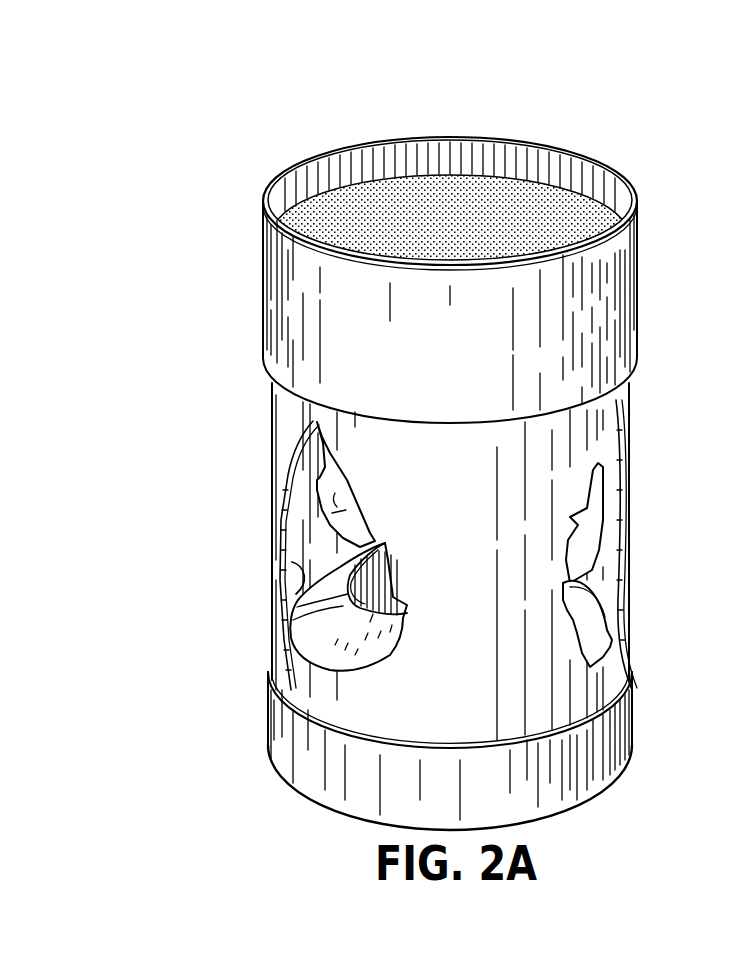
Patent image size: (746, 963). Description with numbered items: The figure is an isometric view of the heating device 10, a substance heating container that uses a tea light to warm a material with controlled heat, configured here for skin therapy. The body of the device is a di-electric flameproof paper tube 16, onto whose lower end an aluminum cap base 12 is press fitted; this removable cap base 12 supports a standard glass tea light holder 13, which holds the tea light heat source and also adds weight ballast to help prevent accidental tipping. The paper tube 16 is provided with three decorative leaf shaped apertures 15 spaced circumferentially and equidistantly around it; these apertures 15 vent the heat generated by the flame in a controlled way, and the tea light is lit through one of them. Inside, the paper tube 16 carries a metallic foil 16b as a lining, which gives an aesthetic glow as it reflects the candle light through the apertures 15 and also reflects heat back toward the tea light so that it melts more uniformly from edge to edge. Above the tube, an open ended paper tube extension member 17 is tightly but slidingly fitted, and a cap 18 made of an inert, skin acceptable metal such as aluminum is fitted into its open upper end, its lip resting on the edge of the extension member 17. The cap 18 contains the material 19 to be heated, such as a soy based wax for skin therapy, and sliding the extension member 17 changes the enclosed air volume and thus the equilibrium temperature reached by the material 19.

The heating device 10 is at (669, 333).
The aluminum cap base 12 is at (617, 753).
The glass tea light holder 13 is at (303, 630).
The leaf shaped apertures 15 is at (608, 486).
The paper tube 16 is at (578, 408).
The metallic foil 16b is at (296, 594).
The tube extension member 17 is at (628, 280).
The cap 18 is at (633, 190).
The material 19 is at (549, 200).